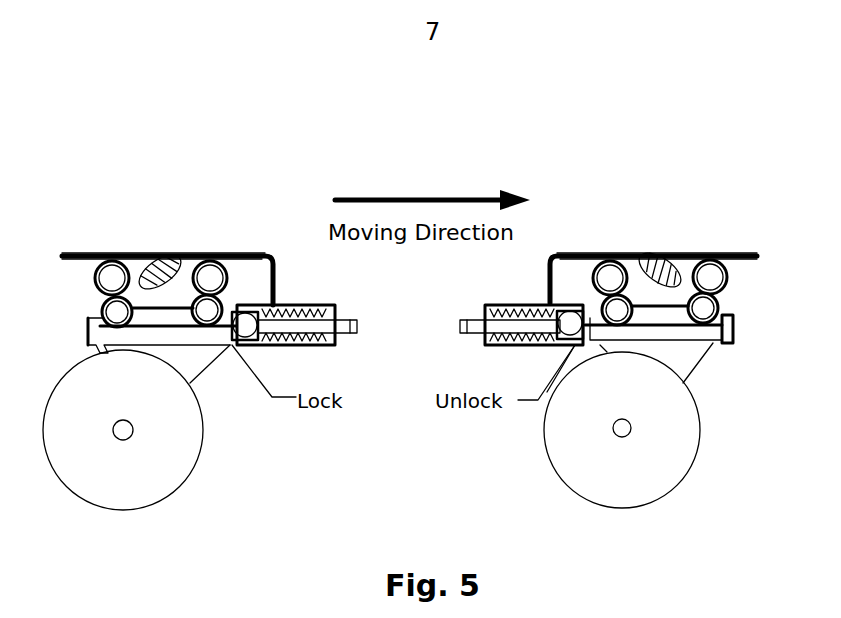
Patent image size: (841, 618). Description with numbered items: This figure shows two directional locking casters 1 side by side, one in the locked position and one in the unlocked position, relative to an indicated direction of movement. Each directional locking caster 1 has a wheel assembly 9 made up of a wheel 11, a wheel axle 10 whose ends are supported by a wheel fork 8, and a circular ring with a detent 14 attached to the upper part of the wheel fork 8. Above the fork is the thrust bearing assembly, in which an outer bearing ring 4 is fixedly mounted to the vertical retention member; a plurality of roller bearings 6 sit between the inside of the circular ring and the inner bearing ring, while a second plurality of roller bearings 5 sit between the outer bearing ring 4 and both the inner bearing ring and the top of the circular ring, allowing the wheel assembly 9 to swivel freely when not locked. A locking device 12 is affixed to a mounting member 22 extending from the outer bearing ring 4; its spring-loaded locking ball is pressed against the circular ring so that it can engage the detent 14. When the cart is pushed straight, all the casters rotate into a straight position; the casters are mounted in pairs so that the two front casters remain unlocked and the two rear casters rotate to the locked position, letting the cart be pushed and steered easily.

The directional locking caster 1 is at (672, 227).
The second plurality of roller bearings 5 is at (717, 252).
The outer bearing ring 4 is at (730, 275).
The roller bearings 6 is at (707, 307).
The detent 14 is at (733, 327).
The mounting member 22 is at (530, 300).
The locking device 12 is at (476, 351).
The wheel fork 8 is at (687, 353).
The wheel assembly 9 is at (513, 461).
The wheel axle 10 is at (632, 430).
The wheel 11 is at (665, 463).